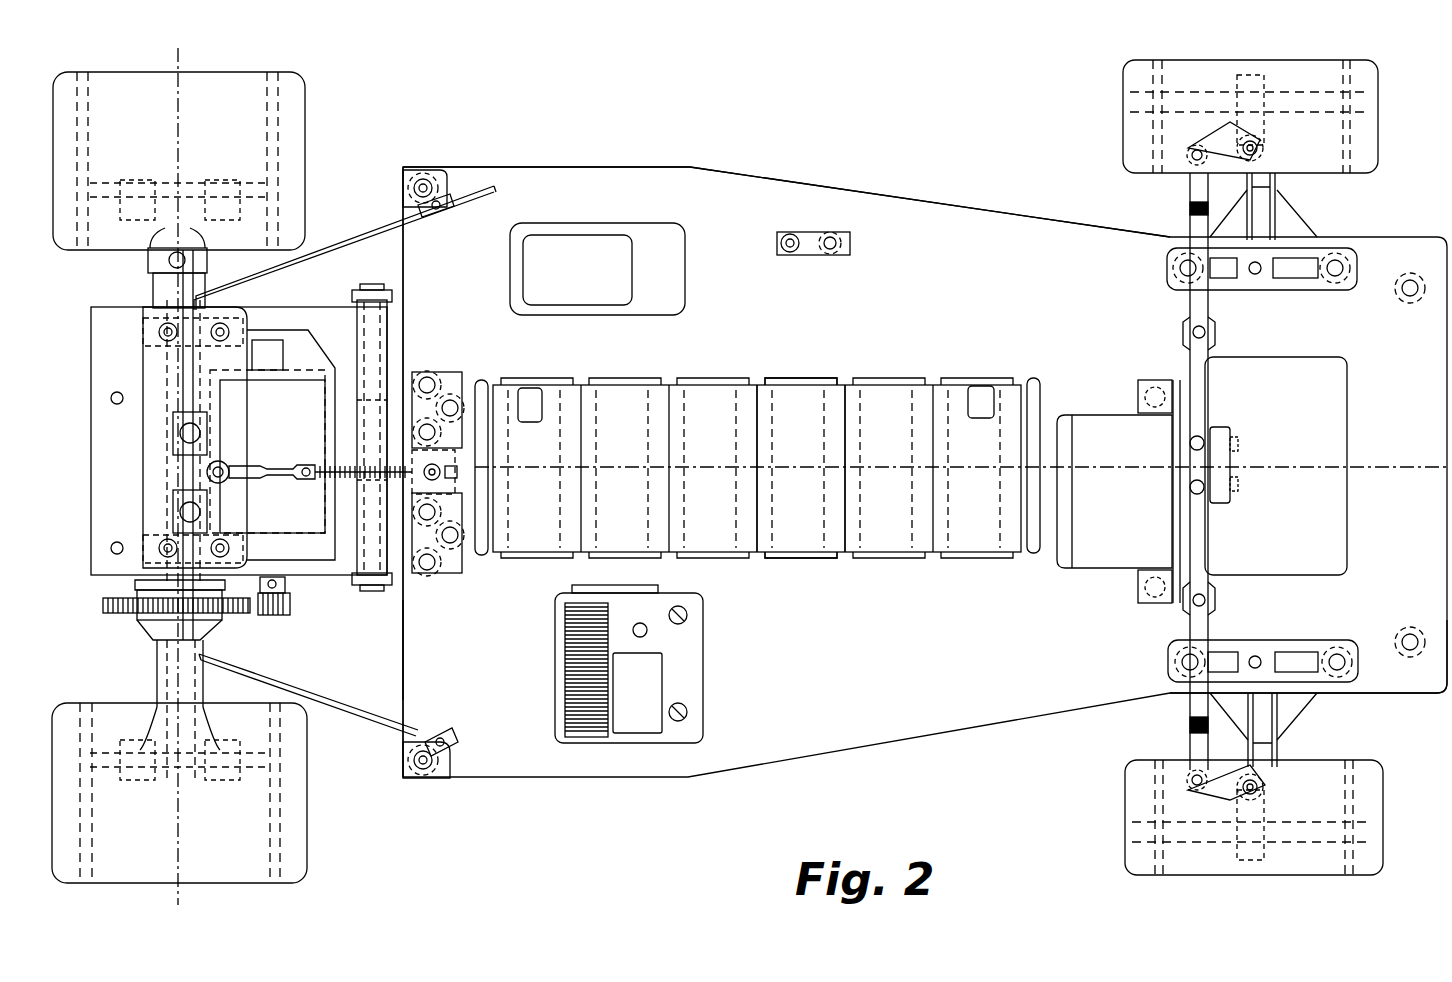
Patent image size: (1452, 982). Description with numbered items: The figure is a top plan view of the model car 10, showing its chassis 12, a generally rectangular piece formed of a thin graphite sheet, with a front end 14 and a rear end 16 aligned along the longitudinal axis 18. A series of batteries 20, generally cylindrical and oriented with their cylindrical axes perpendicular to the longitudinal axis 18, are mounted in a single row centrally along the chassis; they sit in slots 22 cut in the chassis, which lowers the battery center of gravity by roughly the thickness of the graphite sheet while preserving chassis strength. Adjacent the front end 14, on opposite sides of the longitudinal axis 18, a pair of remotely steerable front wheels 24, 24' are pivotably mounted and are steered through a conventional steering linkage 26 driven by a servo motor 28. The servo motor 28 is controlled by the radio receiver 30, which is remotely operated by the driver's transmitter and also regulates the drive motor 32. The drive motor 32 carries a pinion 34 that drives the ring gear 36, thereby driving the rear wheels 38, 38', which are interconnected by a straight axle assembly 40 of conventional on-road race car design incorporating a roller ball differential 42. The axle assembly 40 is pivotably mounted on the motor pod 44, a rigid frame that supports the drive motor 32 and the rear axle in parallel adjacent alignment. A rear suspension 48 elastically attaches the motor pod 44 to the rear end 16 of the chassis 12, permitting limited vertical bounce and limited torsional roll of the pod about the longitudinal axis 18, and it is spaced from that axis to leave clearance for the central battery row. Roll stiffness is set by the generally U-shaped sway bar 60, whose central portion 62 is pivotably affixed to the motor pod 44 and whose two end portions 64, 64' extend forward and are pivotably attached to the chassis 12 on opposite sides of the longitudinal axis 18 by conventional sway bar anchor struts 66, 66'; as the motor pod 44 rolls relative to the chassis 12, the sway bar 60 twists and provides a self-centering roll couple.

The model car 10 is at (811, 167).
The chassis 12 is at (970, 730).
The front end 14 is at (1450, 695).
The rear end 16 is at (403, 625).
The longitudinal axis 18 is at (1380, 463).
The batteries 20 is at (840, 385).
The slots 22 is at (968, 385).
The front wheel 24 is at (1204, 757).
The front wheel 24' is at (1195, 175).
The steering linkage 26 is at (1188, 183).
The servo motor 28 is at (1097, 415).
The radio receiver 30 is at (640, 730).
The drive motor 32 is at (303, 385).
The pinion 34 is at (285, 613).
The ring gear 36 is at (103, 605).
The rear wheel 38 is at (215, 793).
The rear wheel 38' is at (231, 161).
The straight axle assembly 40 is at (150, 278).
The roller ball differential 42 is at (140, 625).
The motor pod 44 is at (100, 365).
The rear suspension 48 is at (443, 632).
The sway bar 60 is at (382, 730).
The central portion 62 is at (178, 395).
The end portion 64 is at (463, 795).
The end portion 64' is at (371, 201).
The sway bar anchor strut 66 is at (480, 791).
The sway bar anchor strut 66' is at (448, 147).